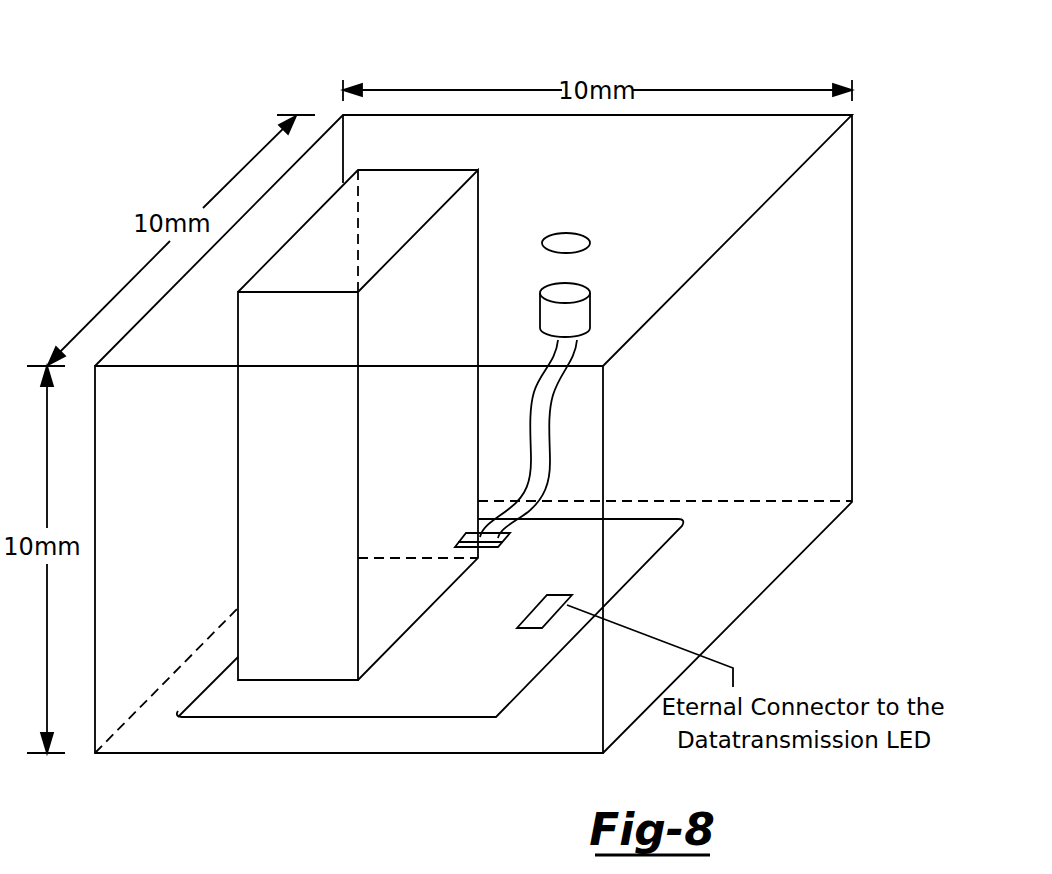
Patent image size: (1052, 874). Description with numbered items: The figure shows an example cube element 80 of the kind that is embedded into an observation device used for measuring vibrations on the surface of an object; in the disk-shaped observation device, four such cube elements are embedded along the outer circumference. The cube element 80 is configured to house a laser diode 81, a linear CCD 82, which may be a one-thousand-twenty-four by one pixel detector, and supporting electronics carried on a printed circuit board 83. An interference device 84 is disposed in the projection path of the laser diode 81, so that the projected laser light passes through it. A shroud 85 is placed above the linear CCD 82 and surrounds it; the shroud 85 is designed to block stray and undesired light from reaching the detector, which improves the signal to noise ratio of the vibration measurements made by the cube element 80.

The cube element 80 is at (817, 48).
The laser diode 81 is at (584, 315).
The linear CCD 82 is at (323, 682).
The printed circuit board 83 is at (462, 690).
The interference device 84 is at (565, 238).
The shroud 85 is at (238, 450).